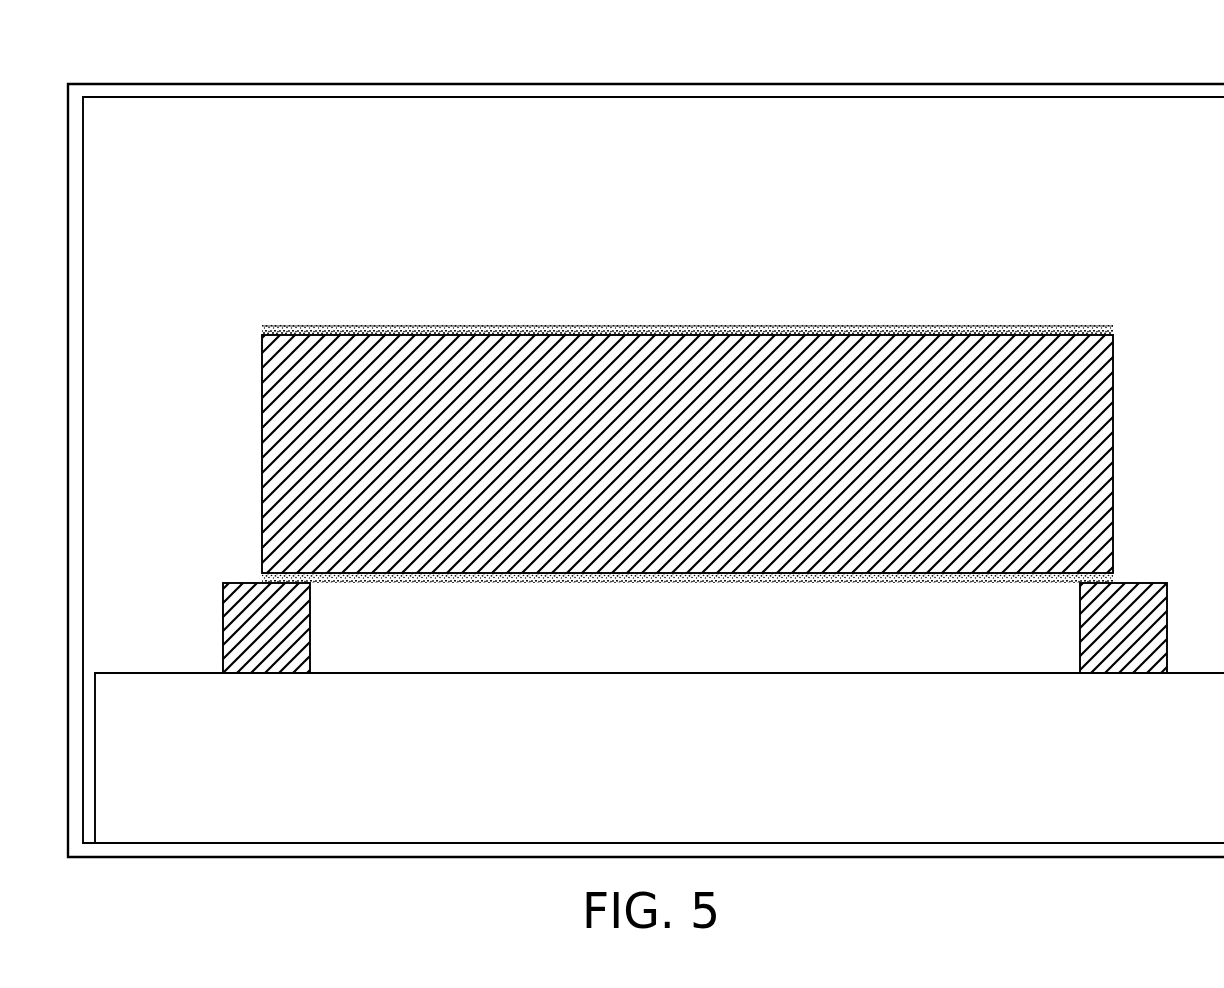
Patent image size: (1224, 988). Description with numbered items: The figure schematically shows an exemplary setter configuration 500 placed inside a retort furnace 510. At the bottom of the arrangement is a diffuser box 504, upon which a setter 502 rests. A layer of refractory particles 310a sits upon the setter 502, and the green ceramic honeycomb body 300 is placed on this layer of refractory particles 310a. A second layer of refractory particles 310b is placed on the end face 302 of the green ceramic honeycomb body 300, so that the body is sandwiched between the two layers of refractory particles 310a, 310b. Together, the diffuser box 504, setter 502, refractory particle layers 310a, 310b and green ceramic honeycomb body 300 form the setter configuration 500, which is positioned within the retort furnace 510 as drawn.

The setter configuration 500 is at (586, 112).
The retort furnace 510 is at (941, 83).
The diffuser box 504 is at (178, 833).
The setter 502 is at (240, 630).
The green ceramic honeycomb body 300 is at (277, 437).
The end face 302 is at (244, 330).
The layer of refractory particles 310a is at (1108, 578).
The layer of refractory particles 310b is at (1097, 331).